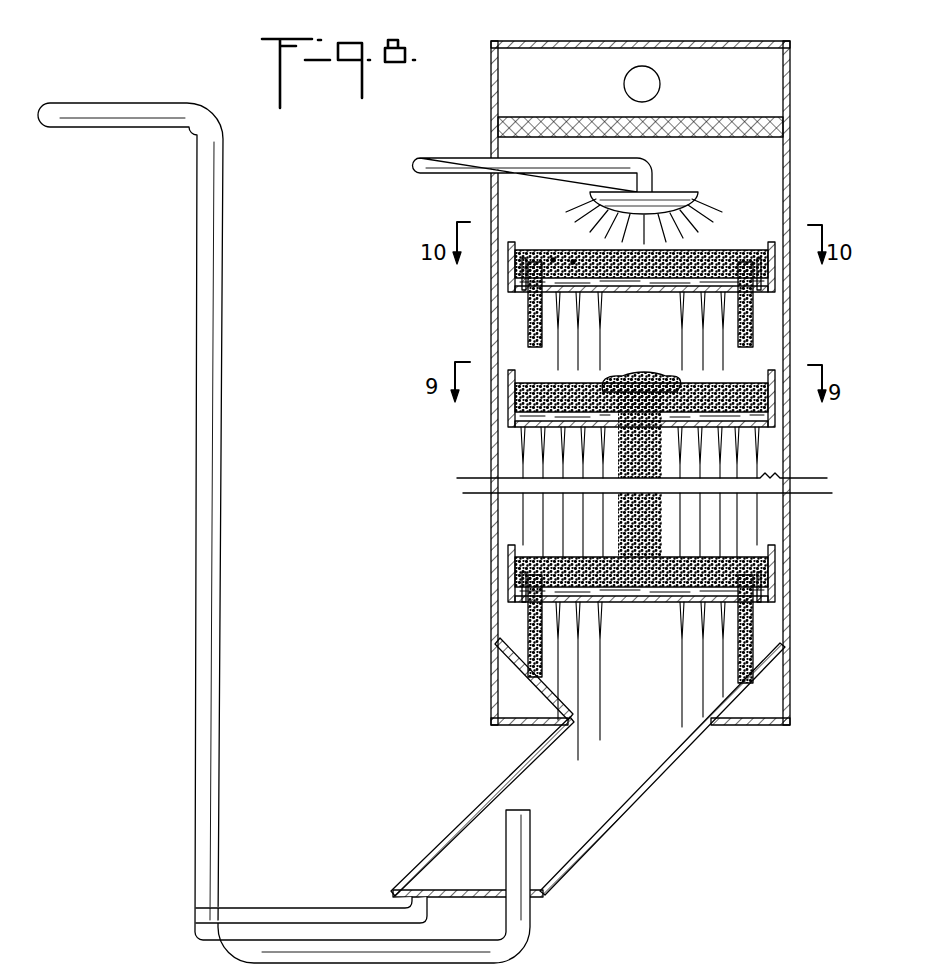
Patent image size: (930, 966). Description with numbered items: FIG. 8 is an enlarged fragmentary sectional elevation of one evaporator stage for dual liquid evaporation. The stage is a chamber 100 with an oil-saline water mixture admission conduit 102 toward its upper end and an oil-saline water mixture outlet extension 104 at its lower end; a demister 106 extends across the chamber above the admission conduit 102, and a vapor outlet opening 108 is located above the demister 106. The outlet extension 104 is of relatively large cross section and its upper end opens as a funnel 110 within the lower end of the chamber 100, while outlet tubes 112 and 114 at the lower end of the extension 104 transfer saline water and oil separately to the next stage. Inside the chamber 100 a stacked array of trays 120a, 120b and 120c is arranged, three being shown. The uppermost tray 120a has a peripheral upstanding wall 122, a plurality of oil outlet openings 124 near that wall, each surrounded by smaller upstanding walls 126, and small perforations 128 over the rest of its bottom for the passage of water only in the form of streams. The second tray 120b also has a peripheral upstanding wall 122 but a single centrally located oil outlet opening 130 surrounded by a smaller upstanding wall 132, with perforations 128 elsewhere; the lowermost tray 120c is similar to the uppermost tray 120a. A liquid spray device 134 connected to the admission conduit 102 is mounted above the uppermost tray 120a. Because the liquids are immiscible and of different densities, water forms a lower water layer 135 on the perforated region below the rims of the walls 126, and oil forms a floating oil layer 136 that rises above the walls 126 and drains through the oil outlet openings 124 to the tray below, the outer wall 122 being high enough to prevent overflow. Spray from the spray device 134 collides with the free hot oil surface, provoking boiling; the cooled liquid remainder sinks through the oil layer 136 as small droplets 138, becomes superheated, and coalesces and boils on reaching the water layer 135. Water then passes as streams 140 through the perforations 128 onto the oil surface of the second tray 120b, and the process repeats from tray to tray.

The chamber 100 is at (491, 84).
The oil-saline water mixture admission conduit 102 is at (422, 160).
The oil-saline water mixture outlet extension 104 is at (500, 793).
The demister 106 is at (498, 118).
The vapor outlet opening 108 is at (660, 84).
The funnel 110 is at (510, 672).
The outlet tube 112 is at (532, 932).
The outlet tube 114 is at (340, 918).
The uppermost tray 120a is at (505, 243).
The second tray 120b is at (505, 372).
The lowermost tray 120c is at (508, 568).
The peripheral upstanding wall 122 is at (508, 272).
The oil outlet openings 124 is at (512, 292).
The smaller upstanding walls 126 is at (523, 250).
The small perforations 128 is at (715, 298).
The single centrally located oil outlet opening 130 is at (660, 467).
The smaller upstanding wall 132 is at (690, 382).
The liquid spray device 134 is at (665, 196).
The water layer 135 is at (641, 264).
The oil layer 136 is at (605, 260).
The droplets 138 is at (573, 258).
The streams 140 is at (700, 346).